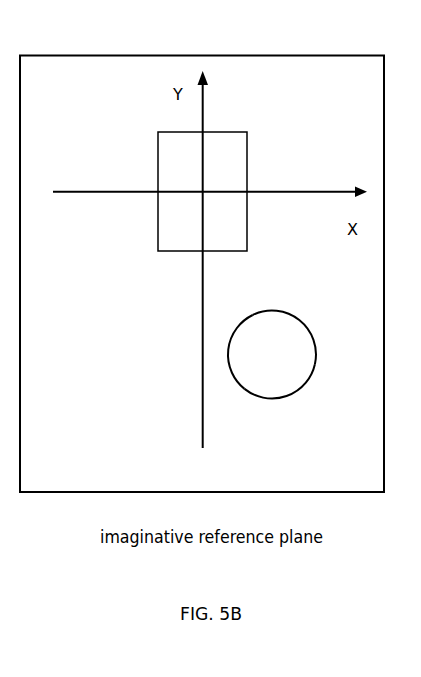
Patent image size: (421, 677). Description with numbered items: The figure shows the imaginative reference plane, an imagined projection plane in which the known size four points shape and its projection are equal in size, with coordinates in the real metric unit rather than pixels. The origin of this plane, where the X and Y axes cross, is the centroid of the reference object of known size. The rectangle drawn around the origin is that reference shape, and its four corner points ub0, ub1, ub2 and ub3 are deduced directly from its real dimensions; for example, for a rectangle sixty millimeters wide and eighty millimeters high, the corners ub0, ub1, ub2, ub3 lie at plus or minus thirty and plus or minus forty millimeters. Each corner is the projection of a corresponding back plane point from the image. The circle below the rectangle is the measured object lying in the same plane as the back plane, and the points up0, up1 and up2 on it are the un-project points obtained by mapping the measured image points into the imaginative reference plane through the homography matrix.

The first corner point of the known size shape in the imaginative reference plane ub0 is at (157, 131).
The second corner point of the known size shape in the imaginative reference plane ub1 is at (247, 132).
The third corner point of the known size shape in the imaginative reference plane ub2 is at (247, 252).
The fourth corner point of the known size shape in the imaginative reference plane ub3 is at (158, 251).
The un-project point of mp0 up0 is at (300, 319).
The un-project point of mp1 up1 is at (282, 399).
The un-project point of mpg up2 is at (228, 355).